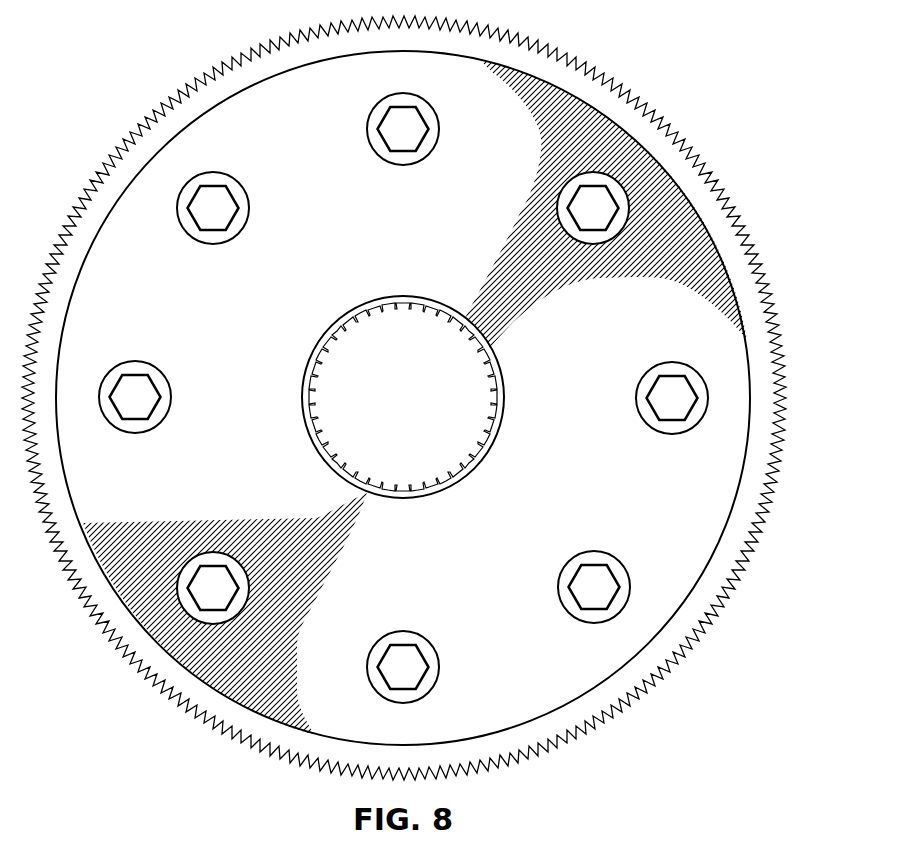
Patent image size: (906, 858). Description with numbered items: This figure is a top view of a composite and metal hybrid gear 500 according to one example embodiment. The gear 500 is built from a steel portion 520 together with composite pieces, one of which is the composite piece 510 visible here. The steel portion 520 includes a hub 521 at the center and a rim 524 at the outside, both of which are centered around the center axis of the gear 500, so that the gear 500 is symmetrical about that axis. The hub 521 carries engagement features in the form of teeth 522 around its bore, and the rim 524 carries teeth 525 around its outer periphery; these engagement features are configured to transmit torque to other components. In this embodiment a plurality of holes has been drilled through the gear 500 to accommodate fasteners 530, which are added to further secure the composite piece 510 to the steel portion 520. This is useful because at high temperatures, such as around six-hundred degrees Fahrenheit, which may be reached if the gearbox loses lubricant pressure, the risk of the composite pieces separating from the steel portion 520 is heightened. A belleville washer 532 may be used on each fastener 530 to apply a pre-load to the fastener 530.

The gear 500 is at (453, 429).
The composite piece 510 is at (500, 582).
The steel portion 520 is at (58, 298).
The hub 521 is at (364, 306).
The teeth 522 is at (452, 473).
The rim 524 is at (737, 522).
The teeth 525 is at (692, 148).
The fastener 530 is at (192, 221).
The belleville washer 532 is at (234, 178).